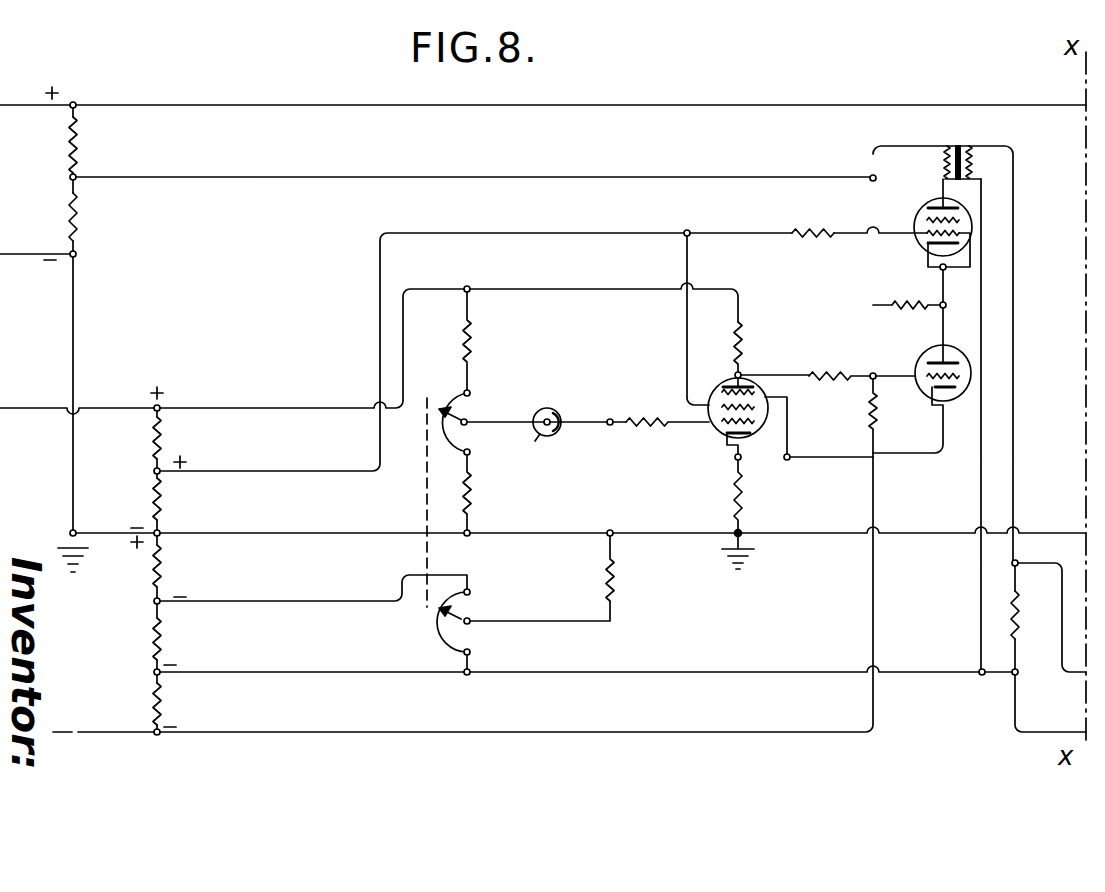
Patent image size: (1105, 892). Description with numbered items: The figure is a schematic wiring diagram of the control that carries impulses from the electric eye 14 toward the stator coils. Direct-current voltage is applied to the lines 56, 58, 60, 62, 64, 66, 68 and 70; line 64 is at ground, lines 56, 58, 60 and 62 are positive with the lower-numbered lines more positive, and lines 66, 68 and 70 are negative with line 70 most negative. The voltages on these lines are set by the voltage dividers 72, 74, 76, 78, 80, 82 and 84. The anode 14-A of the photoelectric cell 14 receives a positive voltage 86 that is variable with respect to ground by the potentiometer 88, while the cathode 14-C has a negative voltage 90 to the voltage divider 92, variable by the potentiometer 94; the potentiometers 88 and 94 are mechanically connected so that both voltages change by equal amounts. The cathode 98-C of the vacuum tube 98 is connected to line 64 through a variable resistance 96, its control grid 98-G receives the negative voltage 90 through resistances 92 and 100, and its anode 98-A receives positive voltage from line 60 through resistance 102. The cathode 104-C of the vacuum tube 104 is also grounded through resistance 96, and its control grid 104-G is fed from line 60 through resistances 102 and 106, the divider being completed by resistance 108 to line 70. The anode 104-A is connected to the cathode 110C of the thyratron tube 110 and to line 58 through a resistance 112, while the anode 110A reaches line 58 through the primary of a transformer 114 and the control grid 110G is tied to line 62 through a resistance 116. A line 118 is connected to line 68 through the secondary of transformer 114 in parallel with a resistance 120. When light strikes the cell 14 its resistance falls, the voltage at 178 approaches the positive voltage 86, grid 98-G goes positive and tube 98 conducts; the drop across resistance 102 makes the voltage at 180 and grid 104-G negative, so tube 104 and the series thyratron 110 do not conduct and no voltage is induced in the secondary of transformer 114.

The electric eye 14 is at (547, 407).
The anode 14-A is at (539, 431).
The cathode 14-C is at (562, 415).
The line 56 is at (233, 104).
The line 58 is at (237, 176).
The line 60 is at (245, 407).
The line 62 is at (278, 471).
The line 64 is at (288, 533).
The line 66 is at (264, 601).
The line 68 is at (272, 672).
The line 70 is at (258, 732).
The voltage divider 72 is at (85, 140).
The voltage divider 74 is at (85, 212).
The voltage divider 76 is at (165, 438).
The voltage divider 78 is at (165, 507).
The voltage divider 80 is at (165, 563).
The voltage divider 82 is at (165, 642).
The voltage divider 84 is at (170, 699).
The positive voltage 86 is at (500, 422).
The potentiometer 88 is at (455, 398).
The negative voltage 90 is at (546, 621).
The voltage divider 92 is at (622, 582).
The potentiometer 94 is at (460, 611).
The variable resistance 96 is at (746, 506).
The vacuum tube 98 is at (721, 385).
The anode 98-A is at (746, 385).
The control grid 98-G is at (725, 421).
The cathode 98-C is at (742, 437).
The resistance 100 is at (636, 427).
The resistance 102 is at (734, 328).
The vacuum tube 104 is at (962, 352).
The anode 104-A is at (928, 360).
The control grid 104-G is at (962, 376).
The cathode 104-C is at (952, 392).
The resistance 106 is at (830, 365).
The resistance 108 is at (880, 420).
The thyratron tube 110 is at (972, 213).
The anode 110A is at (952, 209).
The control grid 110G is at (930, 223).
The cathode 110C is at (956, 244).
The resistance 112 is at (915, 280).
The transformer 114 is at (964, 145).
The resistance 116 is at (804, 236).
The line 118 is at (1062, 647).
The resistance 120 is at (990, 683).
The voltage 178 is at (582, 426).
The voltage 180 is at (793, 377).